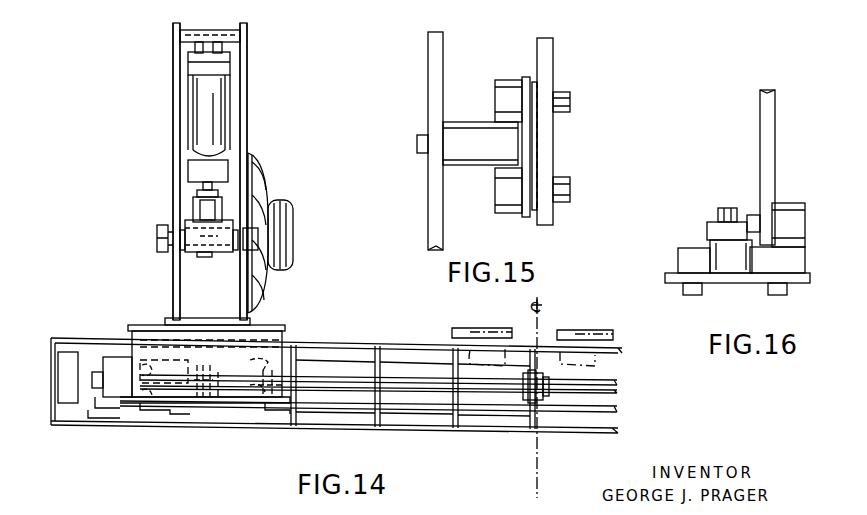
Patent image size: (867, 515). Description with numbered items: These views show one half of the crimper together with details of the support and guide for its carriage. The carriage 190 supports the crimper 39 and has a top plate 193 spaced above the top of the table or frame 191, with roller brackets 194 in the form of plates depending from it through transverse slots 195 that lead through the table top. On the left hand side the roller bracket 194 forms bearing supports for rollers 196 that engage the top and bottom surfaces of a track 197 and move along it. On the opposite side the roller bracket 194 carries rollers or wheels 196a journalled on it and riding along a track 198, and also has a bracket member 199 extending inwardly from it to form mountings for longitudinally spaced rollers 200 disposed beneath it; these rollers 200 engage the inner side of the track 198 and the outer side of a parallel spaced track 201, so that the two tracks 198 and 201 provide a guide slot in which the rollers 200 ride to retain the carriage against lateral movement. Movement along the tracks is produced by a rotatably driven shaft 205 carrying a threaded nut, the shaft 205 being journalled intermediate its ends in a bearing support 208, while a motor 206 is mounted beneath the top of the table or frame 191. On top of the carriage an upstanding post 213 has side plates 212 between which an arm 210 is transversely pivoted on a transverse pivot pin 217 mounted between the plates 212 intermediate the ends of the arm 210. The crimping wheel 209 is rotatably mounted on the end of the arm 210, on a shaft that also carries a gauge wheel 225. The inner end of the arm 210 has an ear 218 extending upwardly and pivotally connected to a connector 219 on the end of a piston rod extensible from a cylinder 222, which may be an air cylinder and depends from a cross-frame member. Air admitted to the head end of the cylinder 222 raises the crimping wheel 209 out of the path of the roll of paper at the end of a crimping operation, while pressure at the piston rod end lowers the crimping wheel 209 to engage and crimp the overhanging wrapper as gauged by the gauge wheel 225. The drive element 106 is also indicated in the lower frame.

In FIG. 14, the crimper 39 is at (168, 104).
In FIG. 14, the drive element 106 is at (288, 333).
In FIG. 14, the carriage 190 is at (147, 340).
In FIG. 14, the table or frame 191 is at (376, 344).
In FIG. 14, the top plate 193 is at (282, 324).
In FIG. 14, the roller bracket 194 is at (110, 337).
In FIG. 15, the transverse slot 195 is at (555, 134).
In FIG. 14, the roller 196 is at (137, 322).
In FIG. 15, the roller 196 is at (508, 78).
In FIG. 16, the roller or wheel 196a is at (790, 205).
In FIG. 14, the track 197 is at (414, 404).
In FIG. 15, the track 197 is at (468, 167).
In FIG. 16, the track 198 is at (795, 266).
In FIG. 16, the bracket member 199 is at (742, 224).
In FIG. 16, the roller 200 is at (740, 270).
In FIG. 16, the track 201 is at (685, 248).
In FIG. 14, the shaft 205 is at (402, 388).
In FIG. 14, the motor 206 is at (120, 340).
In FIG. 14, the bearing support 208 is at (538, 376).
In FIG. 14, the crimping wheel 209 is at (266, 168).
In FIG. 14, the arm 210 is at (203, 257).
In FIG. 14, the side plate 212 is at (248, 117).
In FIG. 14, the upstanding post 213 is at (248, 50).
In FIG. 14, the transverse pivot pin 217 is at (157, 232).
In FIG. 14, the ear 218 is at (203, 212).
In FIG. 14, the connector 219 is at (196, 192).
In FIG. 14, the cylinder 222 is at (229, 103).
In FIG. 14, the gauge wheel 225 is at (294, 207).